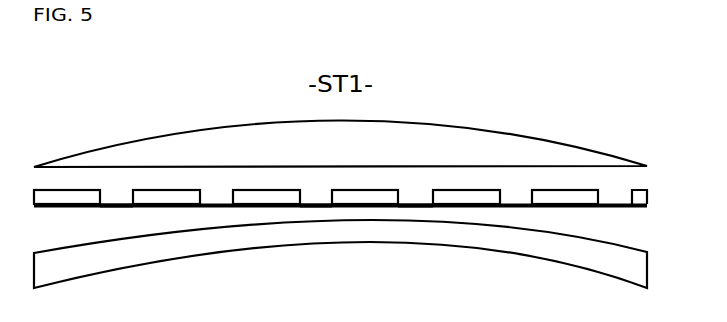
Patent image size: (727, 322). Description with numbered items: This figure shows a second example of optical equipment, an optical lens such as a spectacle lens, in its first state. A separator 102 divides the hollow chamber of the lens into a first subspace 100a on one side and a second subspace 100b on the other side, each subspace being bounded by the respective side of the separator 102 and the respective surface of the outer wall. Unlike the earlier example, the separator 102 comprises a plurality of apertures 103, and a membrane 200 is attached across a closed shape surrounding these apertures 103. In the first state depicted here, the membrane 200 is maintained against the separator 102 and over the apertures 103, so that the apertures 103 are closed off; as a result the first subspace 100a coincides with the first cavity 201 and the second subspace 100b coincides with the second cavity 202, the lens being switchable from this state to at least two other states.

The first subspace 100a is at (340, 123).
The first cavity 201 is at (137, 163).
The membrane 200 is at (447, 192).
The separator 102 is at (573, 186).
The apertures 103 is at (216, 208).
The second subspace 100b is at (340, 269).
The second cavity 202 is at (584, 237).